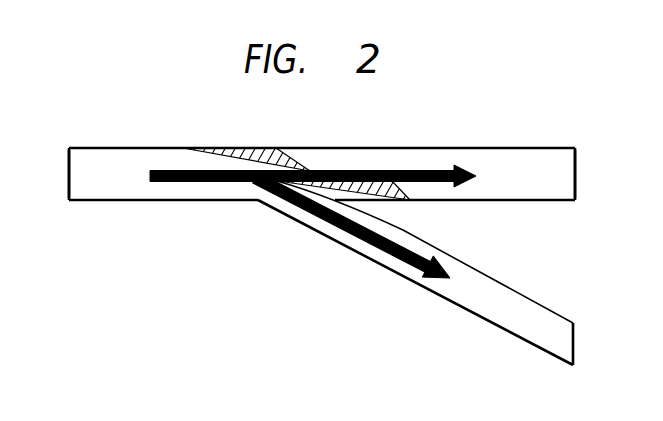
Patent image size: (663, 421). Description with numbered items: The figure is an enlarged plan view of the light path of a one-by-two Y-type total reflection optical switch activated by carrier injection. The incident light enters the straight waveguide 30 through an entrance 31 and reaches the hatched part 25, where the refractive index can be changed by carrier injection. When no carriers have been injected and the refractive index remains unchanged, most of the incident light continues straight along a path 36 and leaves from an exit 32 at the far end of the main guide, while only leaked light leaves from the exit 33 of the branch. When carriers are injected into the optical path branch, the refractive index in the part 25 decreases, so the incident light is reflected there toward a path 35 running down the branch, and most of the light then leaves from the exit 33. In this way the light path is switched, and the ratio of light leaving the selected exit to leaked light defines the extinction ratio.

The part in which a refractive index is changed by carrier injection 25 is at (227, 147).
The main optical waveguide 30 is at (135, 201).
The entrance 31 is at (69, 176).
The exit 32 is at (576, 177).
The exit 33 is at (574, 340).
The path 35 is at (330, 223).
The path 36 is at (377, 169).